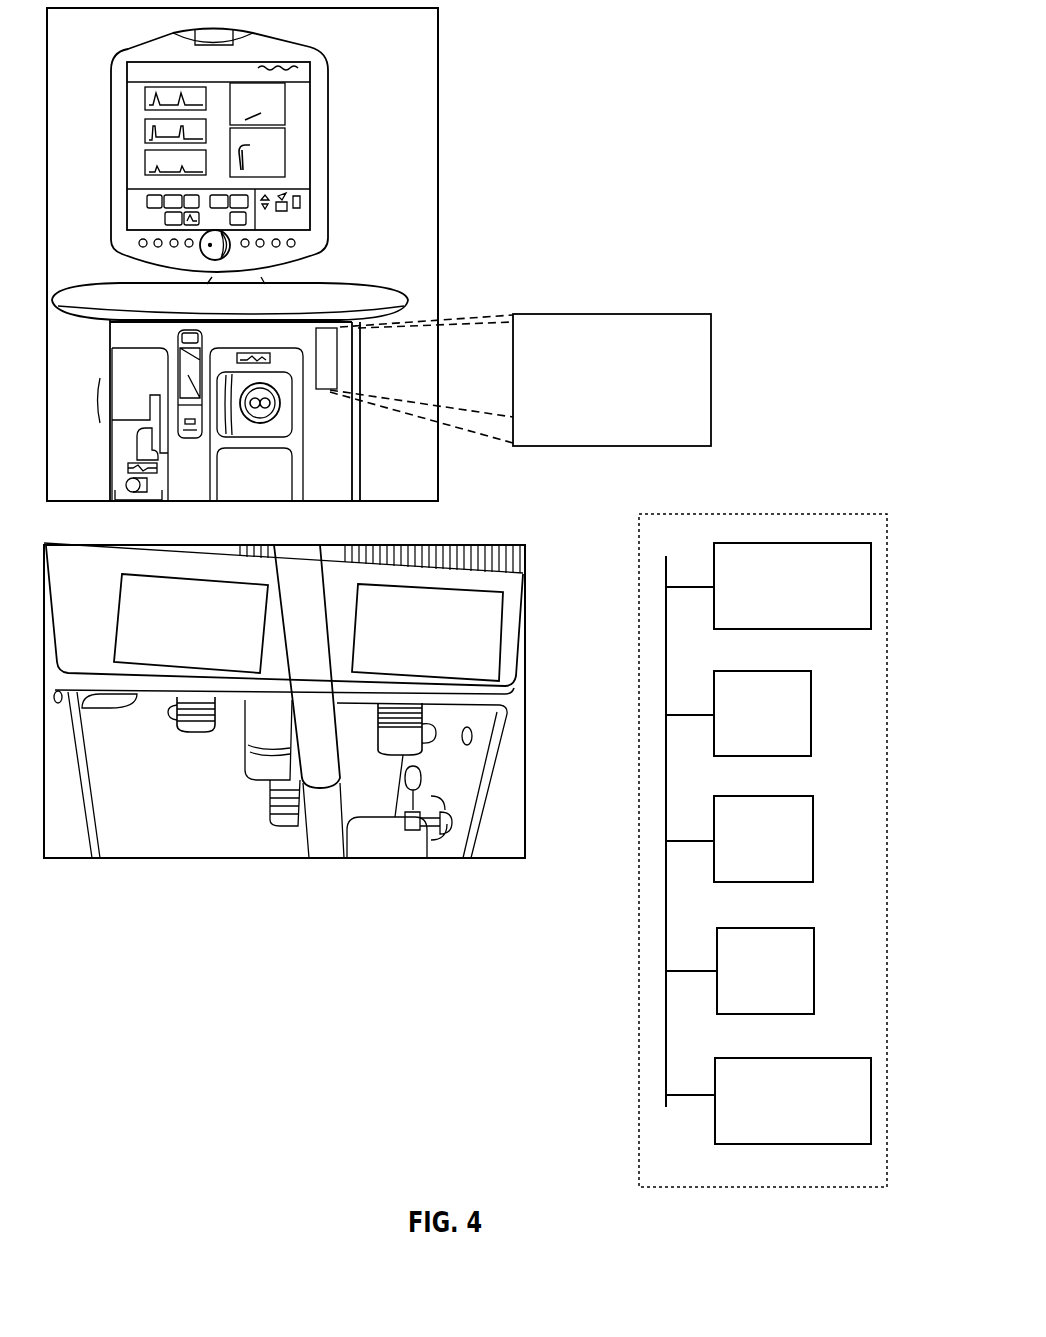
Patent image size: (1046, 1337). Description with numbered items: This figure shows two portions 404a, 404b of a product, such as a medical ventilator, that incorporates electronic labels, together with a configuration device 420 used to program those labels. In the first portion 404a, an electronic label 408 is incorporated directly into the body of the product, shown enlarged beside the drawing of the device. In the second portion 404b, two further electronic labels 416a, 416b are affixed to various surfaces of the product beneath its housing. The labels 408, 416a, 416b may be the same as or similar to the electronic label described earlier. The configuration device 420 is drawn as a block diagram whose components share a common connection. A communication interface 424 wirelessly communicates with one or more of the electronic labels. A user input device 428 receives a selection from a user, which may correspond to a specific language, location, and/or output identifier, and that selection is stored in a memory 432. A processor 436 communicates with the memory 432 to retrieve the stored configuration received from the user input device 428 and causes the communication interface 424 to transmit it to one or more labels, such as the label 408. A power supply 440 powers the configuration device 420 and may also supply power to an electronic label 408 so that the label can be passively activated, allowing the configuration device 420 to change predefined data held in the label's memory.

The portion of a product 404a is at (443, 110).
The portion of a product 404b is at (527, 610).
The electronic label 408 is at (520, 380).
The electronic label 416a is at (191, 623).
The electronic label 416b is at (427, 632).
The configuration device 420 is at (889, 527).
The communication interface 424 is at (768, 586).
The user input device 428 is at (738, 713).
The memory 432 is at (739, 839).
The processor 436 is at (740, 971).
The power supply 440 is at (768, 1101).